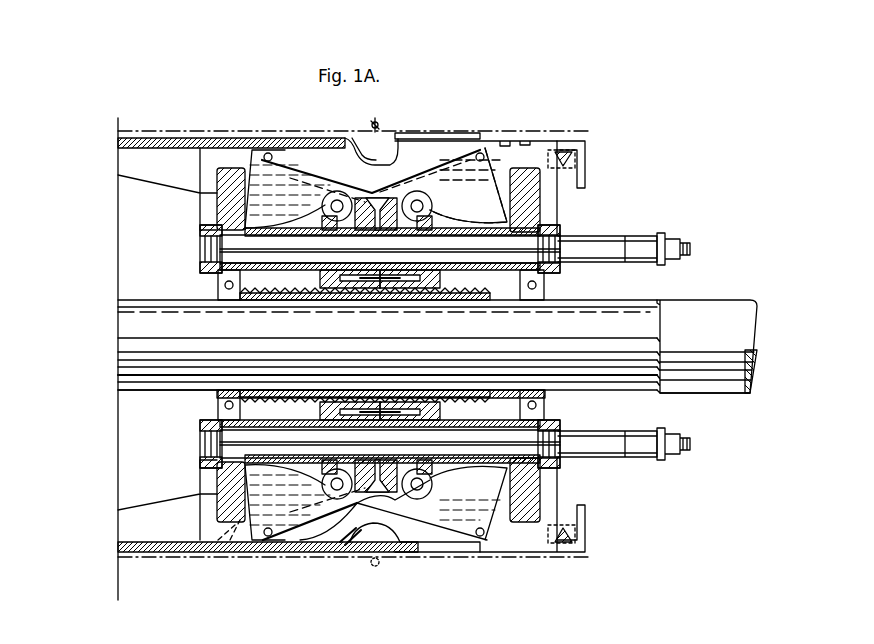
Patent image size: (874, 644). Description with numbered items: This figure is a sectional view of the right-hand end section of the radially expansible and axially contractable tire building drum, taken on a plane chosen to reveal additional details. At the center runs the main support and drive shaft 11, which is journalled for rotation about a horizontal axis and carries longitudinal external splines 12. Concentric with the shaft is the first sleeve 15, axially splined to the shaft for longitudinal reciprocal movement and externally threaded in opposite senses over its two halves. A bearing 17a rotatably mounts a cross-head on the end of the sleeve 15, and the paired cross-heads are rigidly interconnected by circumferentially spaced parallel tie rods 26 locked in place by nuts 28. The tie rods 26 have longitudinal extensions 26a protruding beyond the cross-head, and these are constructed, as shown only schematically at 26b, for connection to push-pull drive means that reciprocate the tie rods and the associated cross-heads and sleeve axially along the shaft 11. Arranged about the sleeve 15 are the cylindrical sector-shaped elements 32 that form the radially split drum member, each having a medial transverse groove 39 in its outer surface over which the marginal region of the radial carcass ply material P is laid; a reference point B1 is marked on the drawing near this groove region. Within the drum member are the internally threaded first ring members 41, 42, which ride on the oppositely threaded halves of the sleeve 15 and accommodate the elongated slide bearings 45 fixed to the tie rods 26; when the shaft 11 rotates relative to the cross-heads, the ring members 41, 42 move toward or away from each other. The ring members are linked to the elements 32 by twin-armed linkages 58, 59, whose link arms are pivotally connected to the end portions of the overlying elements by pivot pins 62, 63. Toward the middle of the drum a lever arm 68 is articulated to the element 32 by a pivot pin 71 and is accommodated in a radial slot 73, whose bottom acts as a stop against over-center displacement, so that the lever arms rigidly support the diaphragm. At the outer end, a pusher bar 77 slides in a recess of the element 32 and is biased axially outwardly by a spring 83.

The main support and drive shaft 11 is at (610, 375).
The longitudinal external splines 12 is at (648, 300).
The first sleeve 15 is at (460, 297).
The bearing 17a is at (214, 403).
The tie rods 26 is at (517, 247).
The longitudinal extensions 26a is at (612, 238).
The connection for push-pull drive means 26b is at (680, 238).
The nuts 28 is at (208, 270).
The sector-shaped elements 32 is at (500, 155).
The transverse groove 39 is at (390, 130).
The first ring member 41 is at (417, 400).
The first ring member 42 is at (327, 275).
The elongated slide bearings 45 is at (472, 268).
The twin-armed linkage 58 is at (455, 558).
The twin-armed linkage 59 is at (319, 565).
The pivot pin 62 is at (487, 545).
The pivot pin 63 is at (267, 552).
The lever arm 68 is at (182, 160).
The pivot pin 71 is at (220, 560).
The radial slot 73 is at (245, 150).
The pusher bar 77 is at (566, 140).
The spring 83 is at (580, 553).
The radial carcass ply material P is at (290, 135).
The reference point B1 is at (374, 328).